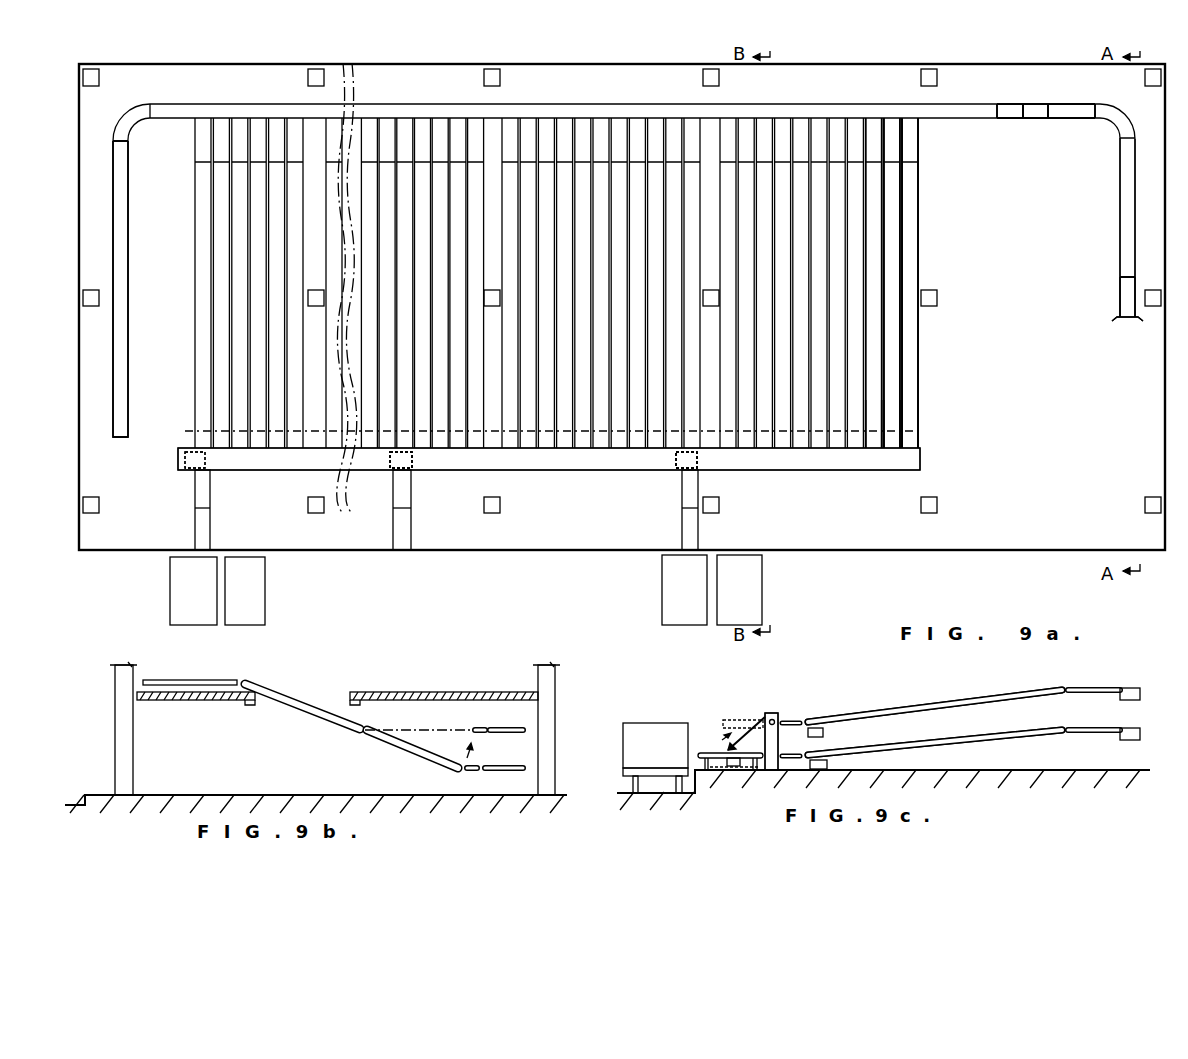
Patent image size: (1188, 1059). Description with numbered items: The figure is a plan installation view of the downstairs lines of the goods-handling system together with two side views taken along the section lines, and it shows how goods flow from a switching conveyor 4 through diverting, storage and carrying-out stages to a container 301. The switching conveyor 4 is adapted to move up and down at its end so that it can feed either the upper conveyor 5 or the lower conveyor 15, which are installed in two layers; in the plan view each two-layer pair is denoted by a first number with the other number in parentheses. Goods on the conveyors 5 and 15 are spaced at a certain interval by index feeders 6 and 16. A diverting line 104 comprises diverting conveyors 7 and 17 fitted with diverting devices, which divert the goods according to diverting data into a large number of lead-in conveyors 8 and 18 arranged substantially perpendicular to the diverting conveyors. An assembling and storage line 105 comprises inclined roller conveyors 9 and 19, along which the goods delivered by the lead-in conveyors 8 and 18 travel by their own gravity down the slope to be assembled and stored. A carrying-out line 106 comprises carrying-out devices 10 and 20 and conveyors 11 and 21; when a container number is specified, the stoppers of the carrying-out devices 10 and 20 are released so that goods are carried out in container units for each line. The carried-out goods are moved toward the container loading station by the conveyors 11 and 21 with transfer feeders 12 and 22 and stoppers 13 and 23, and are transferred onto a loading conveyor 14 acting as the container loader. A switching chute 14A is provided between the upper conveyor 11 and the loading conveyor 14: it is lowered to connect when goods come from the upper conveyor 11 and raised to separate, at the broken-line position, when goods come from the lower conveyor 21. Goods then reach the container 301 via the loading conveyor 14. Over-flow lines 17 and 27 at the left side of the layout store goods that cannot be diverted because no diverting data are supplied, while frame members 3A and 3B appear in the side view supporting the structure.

In FIG. 9a, the diverting line 104 is at (940, 105).
In FIG. 9c, the assembling and storage line 105 is at (940, 693).
In FIG. 9c, the carrying-out line 106 is at (797, 685).
In FIG. 9b, the upper frame member 3A is at (177, 680).
In FIG. 9a, the inclined frame member 3B is at (1125, 298).
In FIG. 9b, the inclined frame member 3B is at (308, 708).
In FIG. 9a, the switching conveyor 4 is at (1120, 237).
In FIG. 9b, the switching conveyor 4 is at (407, 752).
In FIG. 9a, the conveyor 5 is at (1080, 119).
In FIG. 9b, the conveyor 5 is at (525, 728).
In FIG. 9a, the index feeder 6 is at (1035, 119).
In FIG. 9a, the diverting conveyor 7 is at (967, 119).
In FIG. 9c, the diverting conveyor 7 is at (1130, 688).
In FIG. 9a, the lead-in conveyor 8 is at (903, 165).
In FIG. 9c, the lead-in conveyor 8 is at (1078, 690).
In FIG. 9a, the inclined roller conveyor 9 is at (872, 253).
In FIG. 9c, the inclined roller conveyor 9 is at (945, 701).
In FIG. 9a, the carrying-out device 10 is at (875, 446).
In FIG. 9c, the carrying-out device 10 is at (822, 729).
In FIG. 9a, the conveyor 11 is at (838, 471).
In FIG. 9c, the conveyor 11 is at (800, 722).
In FIG. 9a, the transfer feeder 12 is at (411, 468).
In FIG. 9a, the stopper 13 is at (396, 469).
In FIG. 9a, the loading conveyor 14 is at (412, 538).
In FIG. 9c, the loading conveyor 14 is at (705, 752).
In FIG. 9c, the switching chute 14A is at (745, 735).
In FIG. 9a, the conveyor 15 is at (1080, 119).
In FIG. 9b, the conveyor 15 is at (556, 775).
In FIG. 9a, the index feeder 16 is at (1035, 119).
In FIG. 9c, the diverting conveyor 17 is at (1140, 729).
In FIG. 9a, the lead-in conveyor 18 is at (903, 165).
In FIG. 9c, the lead-in conveyor 18 is at (1078, 731).
In FIG. 9a, the inclined roller conveyor 19 is at (872, 253).
In FIG. 9c, the inclined roller conveyor 19 is at (940, 745).
In FIG. 9a, the carrying-out device 20 is at (875, 446).
In FIG. 9c, the carrying-out device 20 is at (826, 759).
In FIG. 9a, the conveyor 21 is at (838, 471).
In FIG. 9c, the conveyor 21 is at (777, 716).
In FIG. 9a, the transfer feeder 22 is at (411, 468).
In FIG. 9a, the stopper 23 is at (396, 469).
In FIG. 9a, the over-flow line 27 is at (124, 298).
In FIG. 9a, the container 301 is at (666, 592).
In FIG. 9c, the container 301 is at (643, 723).